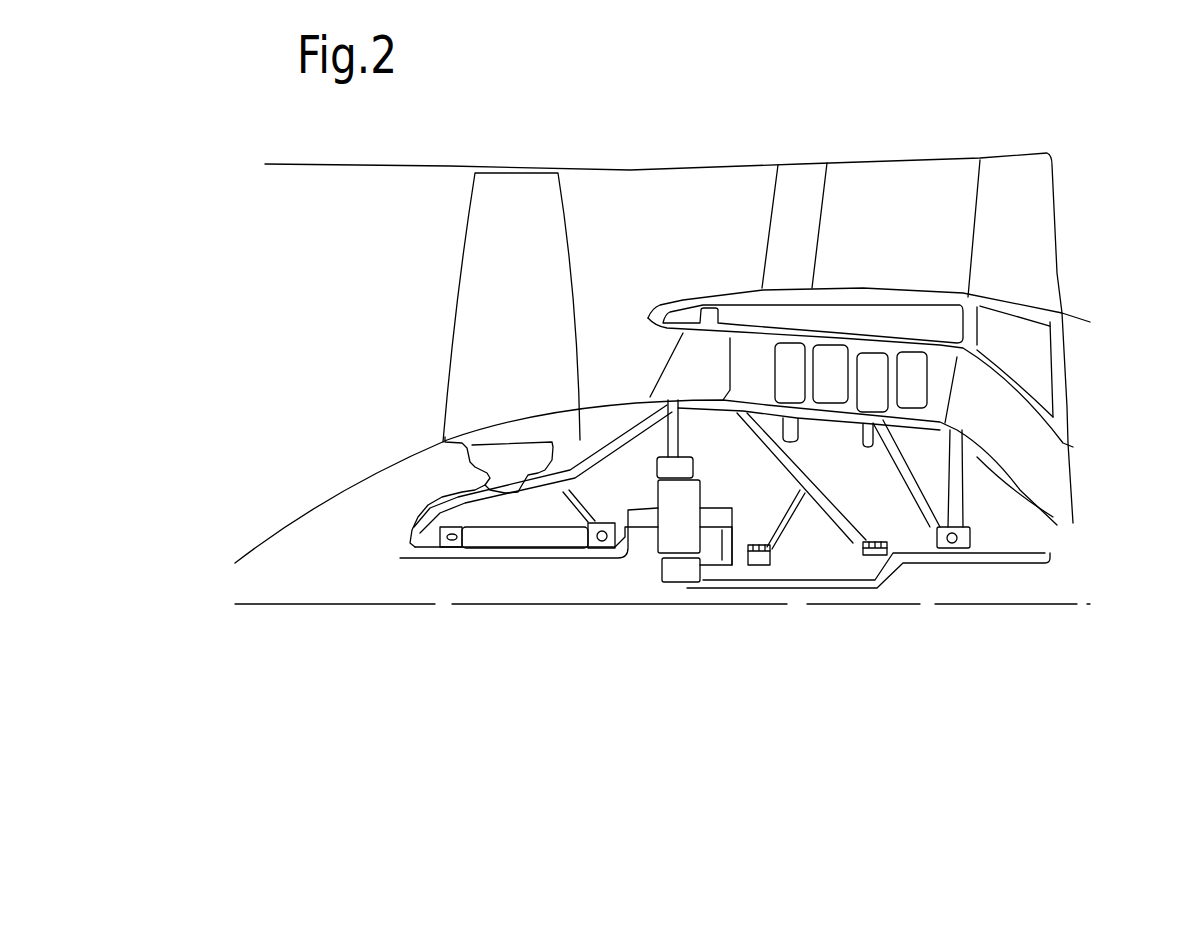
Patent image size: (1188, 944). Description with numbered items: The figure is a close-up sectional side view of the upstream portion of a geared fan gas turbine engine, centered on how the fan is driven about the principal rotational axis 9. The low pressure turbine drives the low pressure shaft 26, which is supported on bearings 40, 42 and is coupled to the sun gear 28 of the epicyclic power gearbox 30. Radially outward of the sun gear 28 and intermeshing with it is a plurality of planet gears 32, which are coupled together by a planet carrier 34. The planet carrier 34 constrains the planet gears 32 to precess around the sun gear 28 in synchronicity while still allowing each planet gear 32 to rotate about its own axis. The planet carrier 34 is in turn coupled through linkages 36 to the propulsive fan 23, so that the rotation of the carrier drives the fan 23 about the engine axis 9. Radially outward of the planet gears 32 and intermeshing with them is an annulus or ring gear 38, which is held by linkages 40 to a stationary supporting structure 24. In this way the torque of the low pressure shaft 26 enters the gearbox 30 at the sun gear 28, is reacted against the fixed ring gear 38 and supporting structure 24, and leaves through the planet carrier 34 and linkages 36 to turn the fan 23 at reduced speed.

The principal rotational axis 9 is at (410, 605).
The propulsive fan 23 is at (482, 345).
The stationary supporting structure 24 is at (692, 368).
The low pressure shaft 26 is at (820, 588).
The sun gear 28 is at (680, 573).
The epicyclic power gearbox 30 is at (627, 560).
The planet gears 32 is at (660, 538).
The planet carrier 34 is at (728, 540).
The linkages 36 is at (605, 561).
The ring gear 38 is at (658, 467).
The bearings / linkages 40 is at (583, 528).
The bearings 42 is at (968, 537).